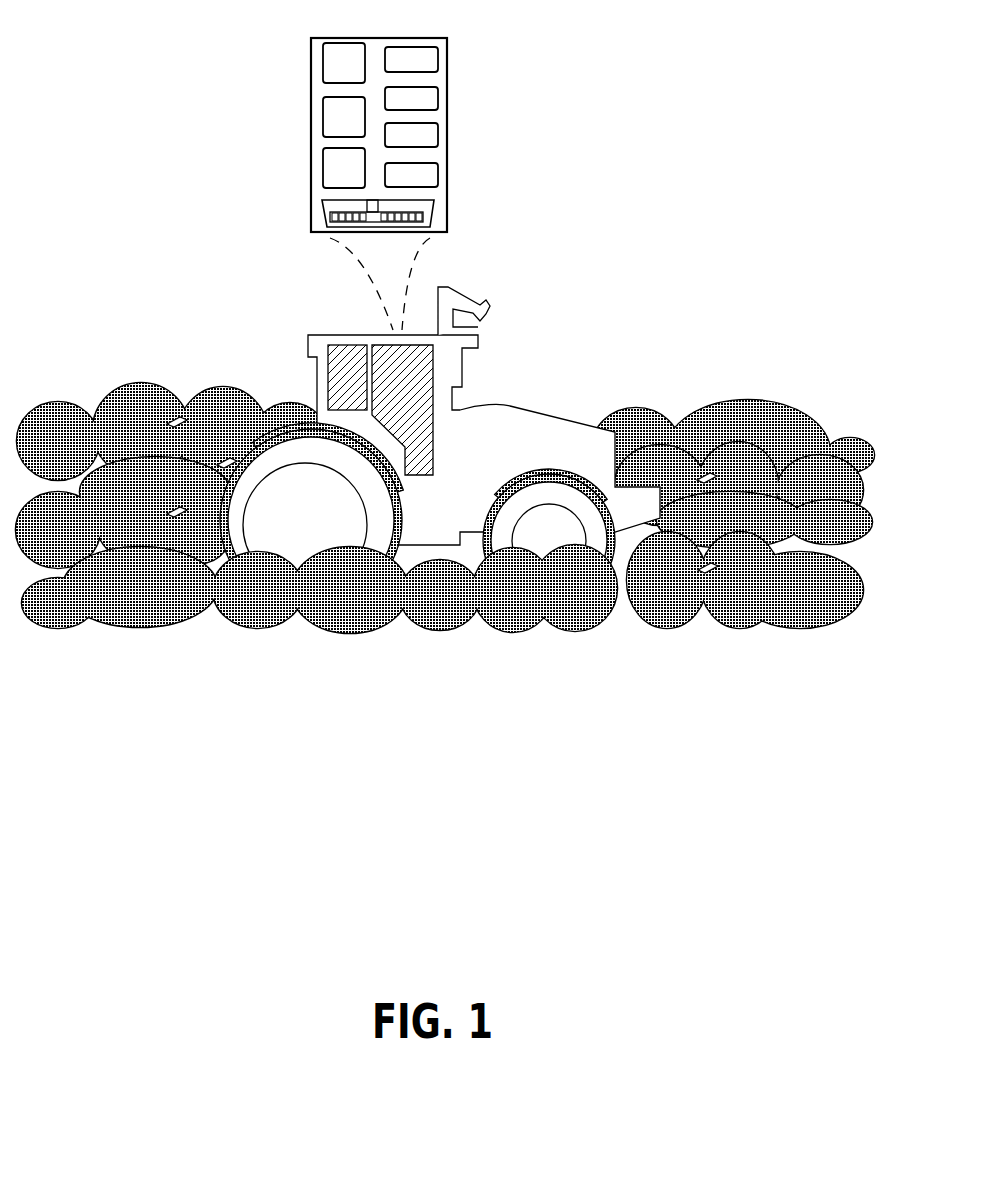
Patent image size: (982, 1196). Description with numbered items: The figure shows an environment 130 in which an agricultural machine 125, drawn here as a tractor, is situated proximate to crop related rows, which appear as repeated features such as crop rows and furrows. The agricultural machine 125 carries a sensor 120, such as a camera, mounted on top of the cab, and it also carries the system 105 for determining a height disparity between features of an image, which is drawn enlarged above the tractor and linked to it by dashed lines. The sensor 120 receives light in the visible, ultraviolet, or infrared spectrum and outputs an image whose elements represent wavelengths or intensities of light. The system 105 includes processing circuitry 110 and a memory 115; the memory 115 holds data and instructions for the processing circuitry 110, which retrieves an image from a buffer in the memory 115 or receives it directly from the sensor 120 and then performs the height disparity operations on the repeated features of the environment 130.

The system 105 is at (377, 124).
The processing circuitry 110 is at (323, 115).
The memory 115 is at (434, 210).
The sensor 120 is at (477, 310).
The agricultural machine 125 is at (368, 335).
The environment 130 is at (830, 367).